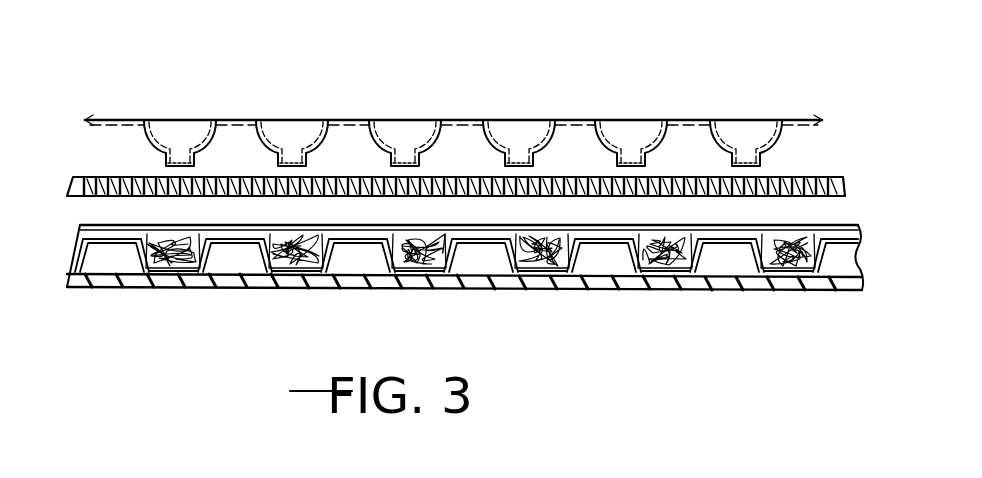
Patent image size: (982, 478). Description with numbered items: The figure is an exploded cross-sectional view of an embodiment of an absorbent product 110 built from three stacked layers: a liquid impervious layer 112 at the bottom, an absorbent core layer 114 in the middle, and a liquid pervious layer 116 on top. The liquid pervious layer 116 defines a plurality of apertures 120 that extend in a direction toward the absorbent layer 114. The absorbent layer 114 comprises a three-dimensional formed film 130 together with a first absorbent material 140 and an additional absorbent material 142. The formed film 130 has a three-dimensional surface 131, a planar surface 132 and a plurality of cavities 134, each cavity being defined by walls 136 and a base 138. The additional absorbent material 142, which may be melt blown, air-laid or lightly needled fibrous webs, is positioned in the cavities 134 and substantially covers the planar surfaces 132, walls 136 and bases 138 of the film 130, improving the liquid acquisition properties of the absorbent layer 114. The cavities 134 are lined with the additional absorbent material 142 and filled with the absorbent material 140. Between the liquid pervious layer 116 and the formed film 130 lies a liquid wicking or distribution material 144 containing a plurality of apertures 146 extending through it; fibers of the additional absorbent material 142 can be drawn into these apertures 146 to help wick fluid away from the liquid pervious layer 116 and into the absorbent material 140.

The absorbent product 110 is at (106, 98).
The liquid impervious layer 112 is at (112, 287).
The absorbent core layer 114 is at (75, 240).
The liquid pervious layer 116 is at (142, 112).
The apertures 120 is at (300, 132).
The three-dimensional formed film 130 is at (214, 262).
The three-dimensional surface 131 is at (618, 238).
The planar surface 132 is at (238, 224).
The cavities 134 is at (316, 224).
The walls 136 is at (340, 255).
The base 138 is at (307, 258).
The first absorbent material 140 is at (534, 266).
The additional absorbent material 142 is at (790, 268).
The liquid wicking or distribution material 144 is at (837, 182).
The apertures 146 is at (789, 181).